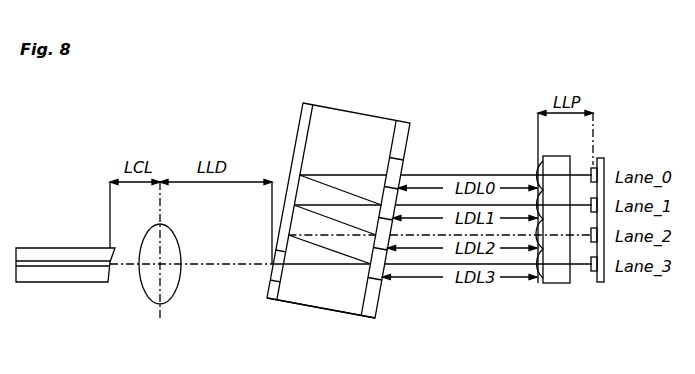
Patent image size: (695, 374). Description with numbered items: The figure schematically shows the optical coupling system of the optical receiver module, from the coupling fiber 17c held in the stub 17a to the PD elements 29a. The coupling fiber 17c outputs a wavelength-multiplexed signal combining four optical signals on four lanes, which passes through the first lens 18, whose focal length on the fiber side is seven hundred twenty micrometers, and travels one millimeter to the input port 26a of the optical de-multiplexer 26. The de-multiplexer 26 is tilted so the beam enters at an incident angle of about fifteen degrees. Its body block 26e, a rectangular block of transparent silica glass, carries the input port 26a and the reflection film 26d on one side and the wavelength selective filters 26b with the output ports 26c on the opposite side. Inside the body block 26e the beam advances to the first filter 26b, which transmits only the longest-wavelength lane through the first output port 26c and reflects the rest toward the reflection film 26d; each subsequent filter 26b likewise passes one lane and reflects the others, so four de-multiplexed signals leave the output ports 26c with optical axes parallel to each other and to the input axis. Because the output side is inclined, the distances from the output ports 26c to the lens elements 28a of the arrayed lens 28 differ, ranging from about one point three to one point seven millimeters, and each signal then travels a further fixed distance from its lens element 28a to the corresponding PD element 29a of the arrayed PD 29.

The stub 17a is at (48, 256).
The coupling fiber 17c is at (78, 267).
The first lens 18 is at (172, 302).
The optical de-multiplexer 26 is at (348, 110).
The input port 26a is at (272, 264).
The wavelength selective filter 26b is at (368, 275).
The output port 26c is at (405, 172).
The reflection film 26d is at (308, 103).
The body block 26e is at (302, 293).
The arrayed lens 28 is at (553, 278).
The lens element 28a is at (538, 172).
The arrayed PD 29 is at (603, 157).
The PD element 29a is at (590, 278).